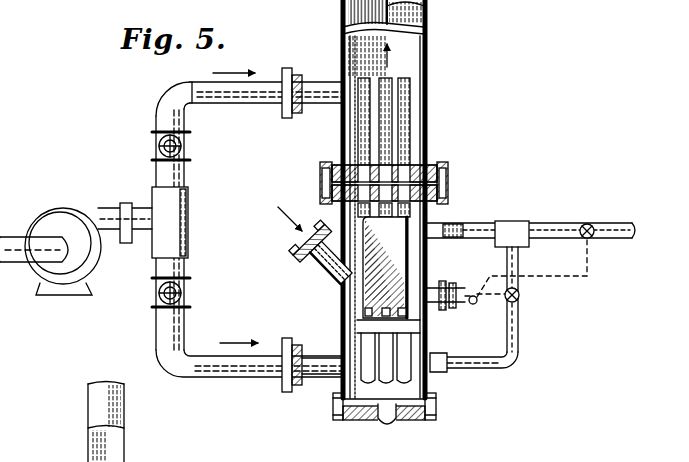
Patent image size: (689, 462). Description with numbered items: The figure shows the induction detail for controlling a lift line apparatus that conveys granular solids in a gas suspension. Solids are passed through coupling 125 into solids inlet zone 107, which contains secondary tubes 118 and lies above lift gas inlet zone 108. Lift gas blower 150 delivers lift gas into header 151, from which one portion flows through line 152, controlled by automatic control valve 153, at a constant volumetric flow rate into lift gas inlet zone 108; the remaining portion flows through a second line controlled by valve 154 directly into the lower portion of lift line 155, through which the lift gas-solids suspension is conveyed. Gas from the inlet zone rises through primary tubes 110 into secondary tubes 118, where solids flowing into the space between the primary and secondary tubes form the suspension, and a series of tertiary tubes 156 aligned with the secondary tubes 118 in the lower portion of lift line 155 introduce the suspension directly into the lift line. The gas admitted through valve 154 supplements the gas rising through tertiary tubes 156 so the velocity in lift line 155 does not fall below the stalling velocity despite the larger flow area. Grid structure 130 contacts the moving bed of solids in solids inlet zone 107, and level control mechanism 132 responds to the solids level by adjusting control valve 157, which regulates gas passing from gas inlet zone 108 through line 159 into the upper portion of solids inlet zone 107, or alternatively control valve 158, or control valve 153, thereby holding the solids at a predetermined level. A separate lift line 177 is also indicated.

The solids inlet zone 107 is at (432, 224).
The lift gas inlet zone 108 is at (428, 388).
The primary tubes 110 is at (360, 374).
The secondary tubes 118 is at (447, 200).
The coupling 125 is at (320, 268).
The grid structure 130 is at (410, 304).
The level control mechanism 132 is at (462, 305).
The lift gas blower 150 is at (53, 224).
The header 151 is at (186, 225).
The line 152 is at (170, 363).
The automatic control valve 153 is at (182, 115).
The valve 154 is at (152, 150).
The lift line 155 is at (428, 57).
The tertiary tubes 156 is at (404, 110).
The control valve 157 is at (520, 297).
The control valve 158 is at (592, 226).
The line 159 is at (522, 361).
The lift line 177 is at (98, 418).